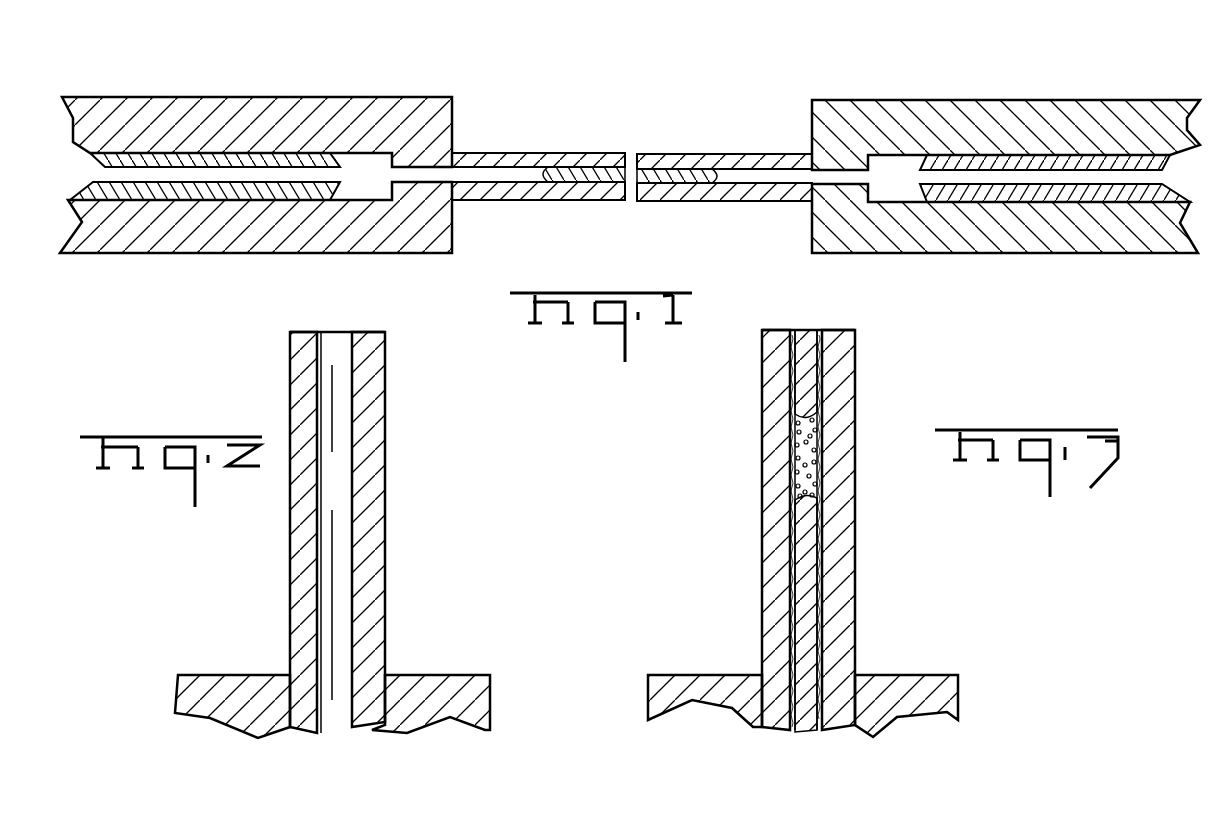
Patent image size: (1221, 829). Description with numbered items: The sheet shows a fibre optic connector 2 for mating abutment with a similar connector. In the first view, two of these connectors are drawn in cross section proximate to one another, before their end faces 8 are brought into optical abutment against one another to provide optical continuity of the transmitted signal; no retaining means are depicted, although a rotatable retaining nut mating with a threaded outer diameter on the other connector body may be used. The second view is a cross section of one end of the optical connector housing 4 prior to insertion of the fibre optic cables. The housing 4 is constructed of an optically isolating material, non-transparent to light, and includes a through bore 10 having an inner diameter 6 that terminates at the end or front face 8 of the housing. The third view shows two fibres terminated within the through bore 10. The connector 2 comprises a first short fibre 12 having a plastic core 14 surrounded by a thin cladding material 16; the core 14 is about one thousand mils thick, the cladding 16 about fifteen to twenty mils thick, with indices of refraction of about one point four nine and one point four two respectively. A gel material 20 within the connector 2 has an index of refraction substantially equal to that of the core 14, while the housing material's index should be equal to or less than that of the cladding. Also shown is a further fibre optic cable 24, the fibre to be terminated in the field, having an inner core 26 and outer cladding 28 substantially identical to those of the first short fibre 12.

In FIG. 1, the connector 2 is at (630, 144).
In FIG. 3, the connector 2 is at (791, 501).
In FIG. 1, the optical connector housing 4 is at (452, 122).
In FIG. 2, the optical connector housing 4 is at (301, 517).
In FIG. 3, the optical connector housing 4 is at (762, 403).
In FIG. 2, the inner diameter 6 is at (352, 500).
In FIG. 1, the end face 8 is at (632, 151).
In FIG. 2, the end face 8 is at (305, 330).
In FIG. 3, the end face 8 is at (777, 330).
In FIG. 2, the through bore 10 is at (340, 353).
In FIG. 3, the first short fibre 12 is at (826, 368).
In FIG. 3, the plastic core 14 is at (808, 403).
In FIG. 3, the cladding material 16 is at (823, 393).
In FIG. 1, the gel material 20 is at (703, 171).
In FIG. 3, the gel material 20 is at (813, 460).
In FIG. 1, the fibre optic cable 24 is at (420, 178).
In FIG. 3, the fibre optic cable 24 is at (822, 610).
In FIG. 3, the inner core 26 is at (810, 585).
In FIG. 3, the outer cladding 28 is at (820, 655).